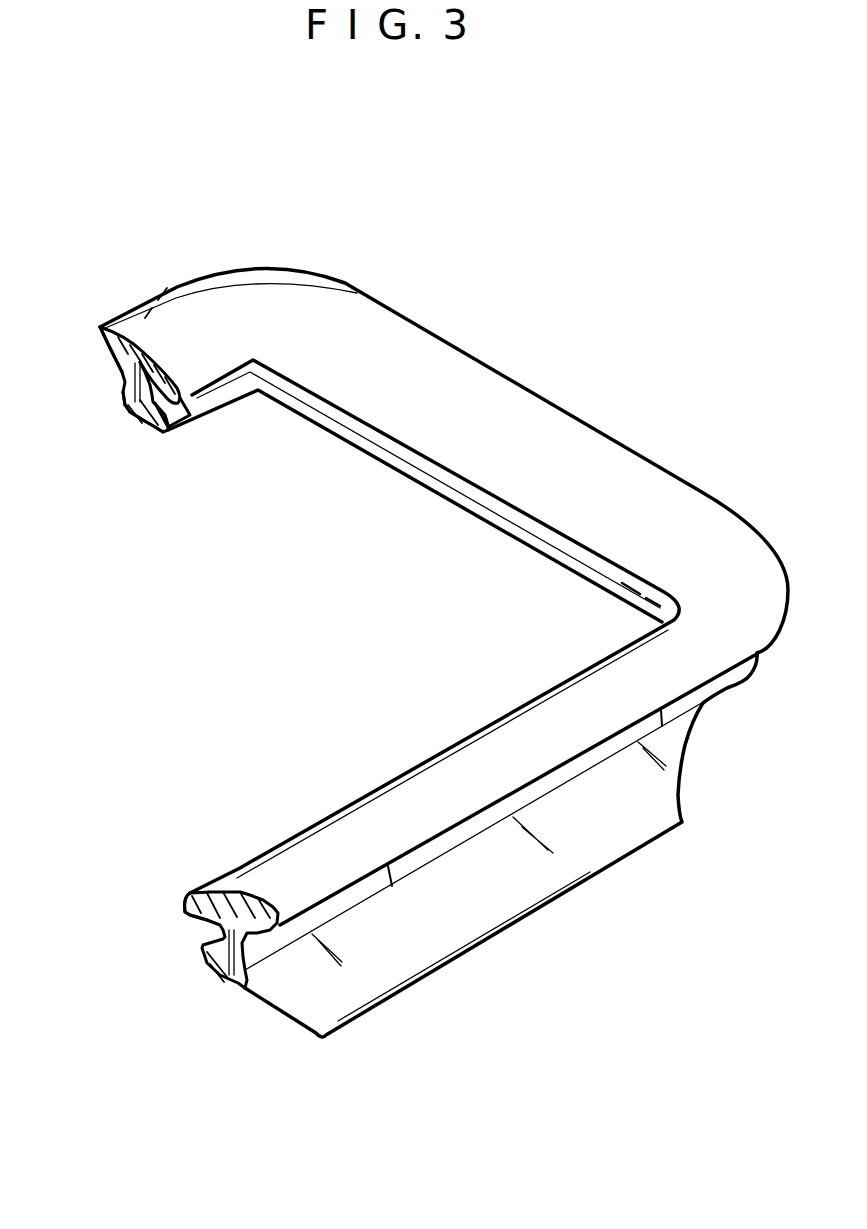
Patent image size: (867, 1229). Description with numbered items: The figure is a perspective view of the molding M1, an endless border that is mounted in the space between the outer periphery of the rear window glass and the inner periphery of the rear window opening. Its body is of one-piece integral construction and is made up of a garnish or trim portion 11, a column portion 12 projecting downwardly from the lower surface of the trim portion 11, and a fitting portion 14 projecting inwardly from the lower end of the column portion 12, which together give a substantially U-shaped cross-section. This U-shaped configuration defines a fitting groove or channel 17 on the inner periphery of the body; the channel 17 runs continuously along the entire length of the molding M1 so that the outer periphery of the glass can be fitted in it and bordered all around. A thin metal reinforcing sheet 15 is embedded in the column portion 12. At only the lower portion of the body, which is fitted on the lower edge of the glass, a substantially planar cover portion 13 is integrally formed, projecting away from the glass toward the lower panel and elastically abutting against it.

The molding M1 is at (390, 471).
The garnish or trim portion 11 is at (130, 318).
The thin metal reinforcing sheet 15 is at (110, 352).
The column portion 12 is at (133, 382).
The fitting portion 14 is at (152, 437).
The fitting groove or channel 17 is at (174, 408).
The cover portion 13 is at (478, 930).